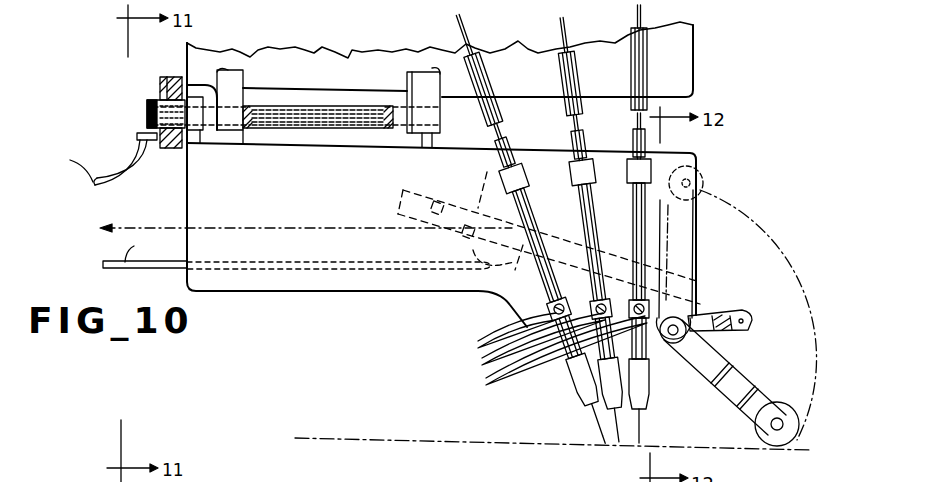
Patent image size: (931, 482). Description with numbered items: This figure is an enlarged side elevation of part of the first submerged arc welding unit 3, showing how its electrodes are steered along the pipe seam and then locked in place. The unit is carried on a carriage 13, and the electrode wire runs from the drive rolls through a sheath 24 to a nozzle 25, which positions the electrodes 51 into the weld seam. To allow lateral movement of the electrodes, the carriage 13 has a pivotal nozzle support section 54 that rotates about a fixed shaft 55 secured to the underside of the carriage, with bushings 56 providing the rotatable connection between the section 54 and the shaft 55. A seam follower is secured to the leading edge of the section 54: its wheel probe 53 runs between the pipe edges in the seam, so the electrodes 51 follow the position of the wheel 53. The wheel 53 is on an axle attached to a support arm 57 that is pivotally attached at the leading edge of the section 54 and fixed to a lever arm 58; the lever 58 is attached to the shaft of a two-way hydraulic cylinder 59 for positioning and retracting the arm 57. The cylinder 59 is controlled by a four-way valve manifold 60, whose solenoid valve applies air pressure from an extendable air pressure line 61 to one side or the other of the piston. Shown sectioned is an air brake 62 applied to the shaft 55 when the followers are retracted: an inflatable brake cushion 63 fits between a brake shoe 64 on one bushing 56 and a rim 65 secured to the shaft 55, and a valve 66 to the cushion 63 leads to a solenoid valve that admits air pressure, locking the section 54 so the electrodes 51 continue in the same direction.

The first submerged arc welding unit 3 is at (708, 60).
The carriage 13 is at (298, 50).
The sheath 24 is at (648, 62).
The nozzle 25 is at (626, 368).
The electrodes 51 is at (618, 446).
The wheel probe 53 is at (700, 177).
The pivotal nozzle support section 54 is at (325, 193).
The fixed shaft 55 is at (332, 115).
The bushings 56 is at (205, 127).
The support arm 57 is at (690, 243).
The lever arm 58 is at (752, 326).
The two-way hydraulic cylinder 59 is at (485, 180).
The four-way valve manifold 60 is at (513, 272).
The extendable air pressure line 61 is at (160, 268).
The air brake 62 is at (156, 82).
The inflatable brake cushion 63 is at (176, 76).
The brake shoe 64 is at (177, 150).
The rim 65 is at (158, 106).
The valve 66 is at (157, 147).